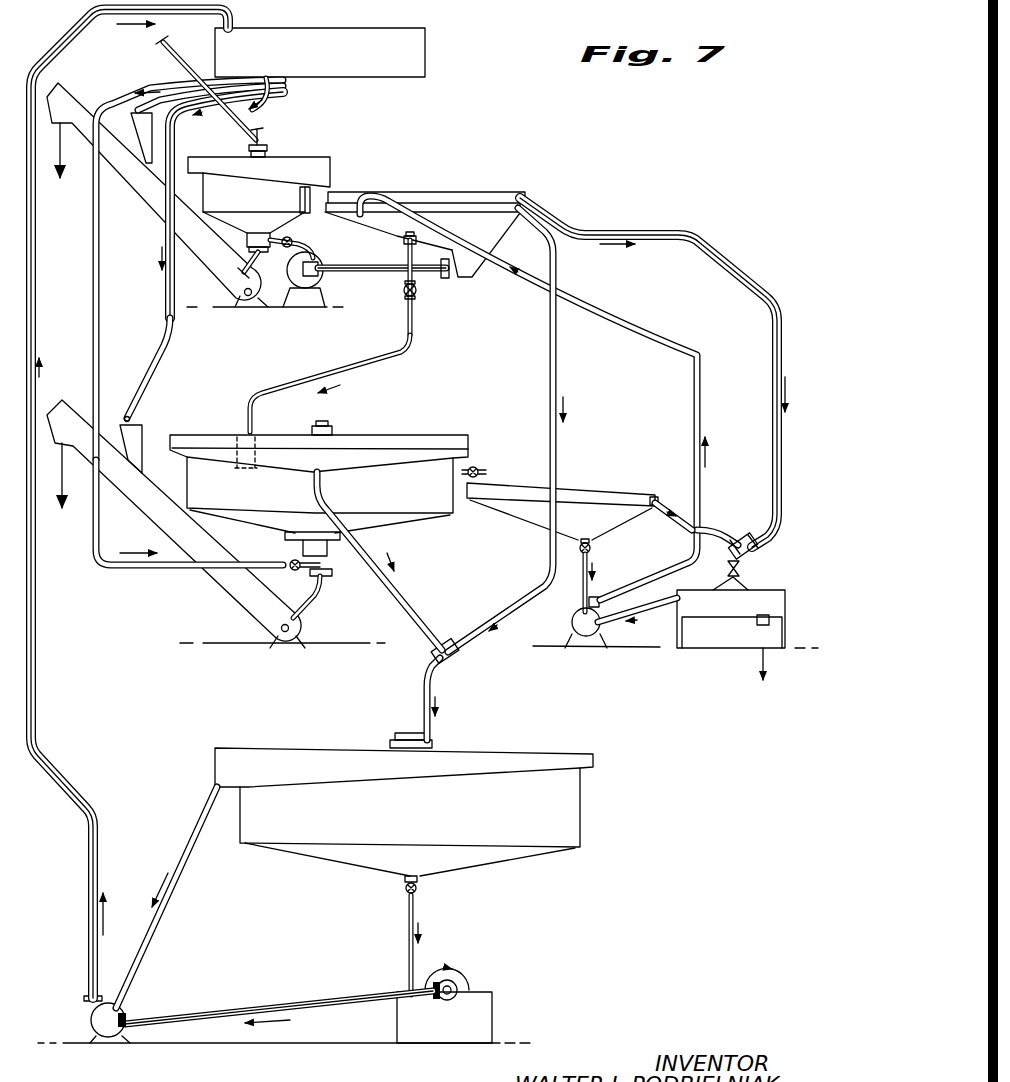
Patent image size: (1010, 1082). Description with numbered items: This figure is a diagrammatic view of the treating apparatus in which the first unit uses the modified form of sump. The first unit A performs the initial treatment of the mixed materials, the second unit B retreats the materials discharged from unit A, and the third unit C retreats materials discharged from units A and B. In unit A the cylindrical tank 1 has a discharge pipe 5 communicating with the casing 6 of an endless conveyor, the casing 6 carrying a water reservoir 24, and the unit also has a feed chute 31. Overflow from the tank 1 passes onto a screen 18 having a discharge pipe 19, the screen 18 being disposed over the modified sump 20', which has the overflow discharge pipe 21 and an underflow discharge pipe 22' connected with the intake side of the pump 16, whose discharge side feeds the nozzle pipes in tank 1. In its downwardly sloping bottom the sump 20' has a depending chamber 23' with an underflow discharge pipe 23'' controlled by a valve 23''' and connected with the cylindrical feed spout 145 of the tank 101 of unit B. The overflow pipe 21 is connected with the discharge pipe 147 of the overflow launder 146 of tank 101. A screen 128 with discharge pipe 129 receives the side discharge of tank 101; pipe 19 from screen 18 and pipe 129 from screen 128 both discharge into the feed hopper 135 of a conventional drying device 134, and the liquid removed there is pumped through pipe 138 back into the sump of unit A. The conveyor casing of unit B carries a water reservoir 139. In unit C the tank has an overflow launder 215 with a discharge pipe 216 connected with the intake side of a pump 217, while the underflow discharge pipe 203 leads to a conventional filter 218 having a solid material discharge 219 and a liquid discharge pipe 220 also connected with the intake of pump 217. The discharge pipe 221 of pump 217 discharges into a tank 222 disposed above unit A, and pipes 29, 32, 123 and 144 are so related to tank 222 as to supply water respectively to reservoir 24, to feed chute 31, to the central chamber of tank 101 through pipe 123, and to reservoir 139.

The cylindrical tank 1 is at (205, 186).
The discharge pipe 5 is at (253, 264).
The conveyor casing 6 is at (157, 204).
The pump 16 is at (303, 290).
The screen 18 is at (426, 199).
The discharge pipe 19 is at (752, 292).
The modified sump 20' is at (378, 231).
The overflow discharge pipe 21 is at (556, 386).
The underflow discharge pipe 22' is at (383, 280).
The depending chamber 23' is at (380, 283).
The underflow discharge pipe 23'' is at (330, 378).
The valve 23''' is at (441, 294).
The water reservoir 24 is at (158, 125).
The water supply pipe 29 is at (189, 257).
The feed chute 31 is at (189, 58).
The water supply pipe 32 is at (268, 92).
The cylindrical tank 101 is at (422, 503).
The water pipe 123 is at (186, 568).
The screen 128 is at (627, 498).
The discharge pipe 129 is at (683, 526).
The drying device 134 is at (691, 635).
The feed hopper 135 is at (744, 568).
The pump discharge pipe 138 is at (700, 393).
The water reservoir 139 is at (141, 438).
The water supply pipe 144 is at (151, 386).
The feed spout 145 is at (238, 466).
The overflow launder 146 is at (356, 457).
The discharge pipe 147 is at (416, 612).
The underflow discharge pipe 203 is at (406, 910).
The overflow launder 215 is at (270, 760).
The discharge pipe 216 is at (166, 914).
The pump 217 is at (90, 1018).
The filter 218 is at (495, 1029).
The solid material discharge 219 is at (526, 995).
The liquid discharge pipe 220 is at (242, 1008).
The pump discharge pipe 221 is at (36, 719).
The tank 222 is at (426, 55).
The first unit A is at (380, 160).
The second unit B is at (413, 418).
The third unit C is at (494, 744).